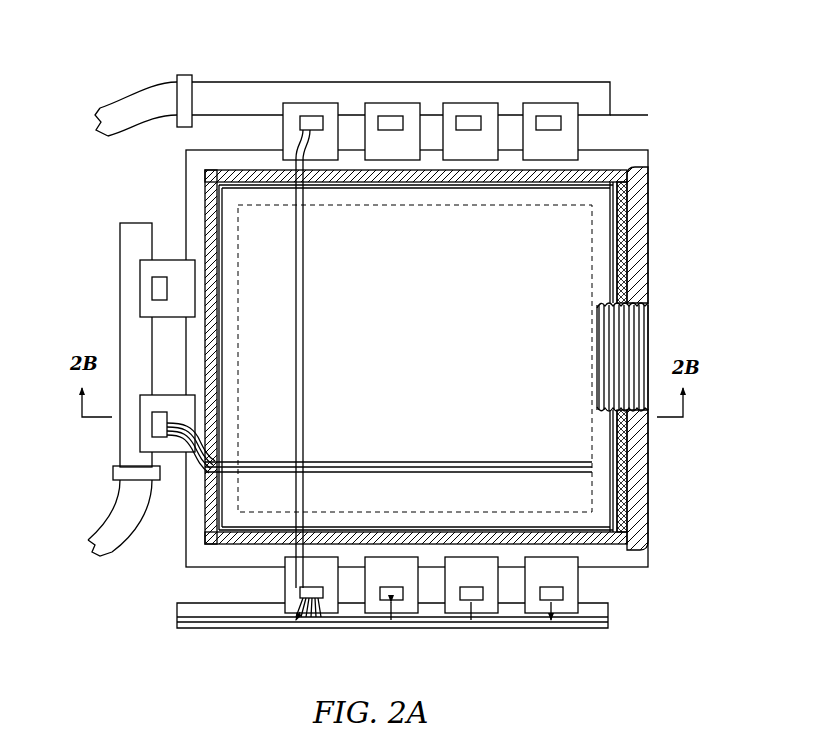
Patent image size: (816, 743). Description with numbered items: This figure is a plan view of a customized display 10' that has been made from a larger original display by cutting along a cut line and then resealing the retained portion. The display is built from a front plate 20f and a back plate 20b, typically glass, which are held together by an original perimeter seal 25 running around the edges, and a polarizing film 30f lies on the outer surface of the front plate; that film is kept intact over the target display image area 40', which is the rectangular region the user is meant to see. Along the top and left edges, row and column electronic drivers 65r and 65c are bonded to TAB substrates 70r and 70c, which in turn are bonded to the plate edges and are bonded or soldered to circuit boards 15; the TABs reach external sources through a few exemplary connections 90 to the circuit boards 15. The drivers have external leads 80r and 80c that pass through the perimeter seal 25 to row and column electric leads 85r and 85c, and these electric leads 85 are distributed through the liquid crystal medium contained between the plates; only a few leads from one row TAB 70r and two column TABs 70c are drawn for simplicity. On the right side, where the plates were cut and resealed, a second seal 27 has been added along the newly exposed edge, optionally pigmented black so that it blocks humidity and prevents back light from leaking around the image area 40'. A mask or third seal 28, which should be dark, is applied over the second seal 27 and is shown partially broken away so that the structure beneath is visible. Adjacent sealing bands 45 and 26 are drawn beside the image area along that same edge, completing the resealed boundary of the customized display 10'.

The customized display 10' is at (429, 324).
The circuit boards 15 is at (227, 96).
The front plate 20f is at (204, 166).
The back plate 20b is at (195, 553).
The polarizing film 30f is at (209, 202).
The perimeter seal 25 is at (588, 170).
The upper sealing band 45 is at (625, 275).
The lower sealing band 26 is at (622, 500).
The target display image area 40' is at (658, 235).
The second seal 27 is at (637, 457).
The mask or third seal 28 is at (632, 318).
The row and column electric leads 85 is at (612, 261).
The column electric lead 85c is at (306, 358).
The row electric lead 85r is at (413, 462).
The column TAB substrate 70c is at (291, 105).
The column electronic driver 65c is at (311, 118).
The row TAB substrate 70r is at (147, 308).
The row electronic driver 65r is at (158, 290).
The row external leads 80r is at (178, 440).
The column external leads 80c is at (300, 570).
The connections 90 is at (333, 605).